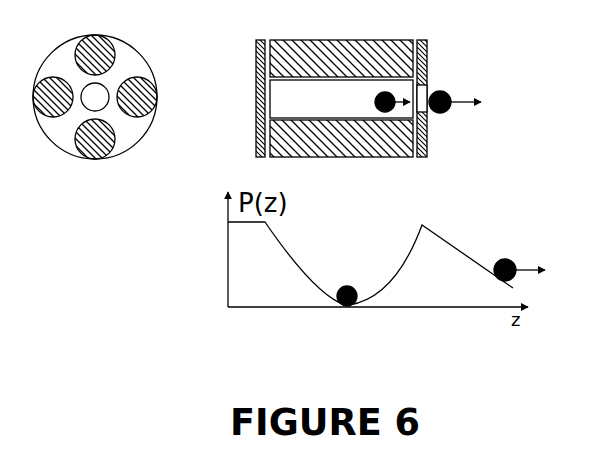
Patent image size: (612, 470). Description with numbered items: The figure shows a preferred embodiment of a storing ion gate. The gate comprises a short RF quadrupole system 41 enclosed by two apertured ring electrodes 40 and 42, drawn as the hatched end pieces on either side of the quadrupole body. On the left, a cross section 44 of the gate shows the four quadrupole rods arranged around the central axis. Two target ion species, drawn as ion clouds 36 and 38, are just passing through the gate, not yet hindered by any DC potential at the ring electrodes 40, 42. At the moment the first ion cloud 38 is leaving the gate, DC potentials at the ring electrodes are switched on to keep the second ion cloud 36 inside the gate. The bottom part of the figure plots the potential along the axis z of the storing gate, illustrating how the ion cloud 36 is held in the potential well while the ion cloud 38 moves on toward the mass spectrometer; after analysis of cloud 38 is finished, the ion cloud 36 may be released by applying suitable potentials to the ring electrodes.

The cross section 44 is at (95, 87).
The apertured ring electrode 40 is at (257, 86).
The RF quadrupole system 41 is at (341, 86).
The apertured ring electrode 42 is at (423, 86).
The second ion cloud 36 is at (380, 116).
The first ion cloud 38 is at (444, 116).